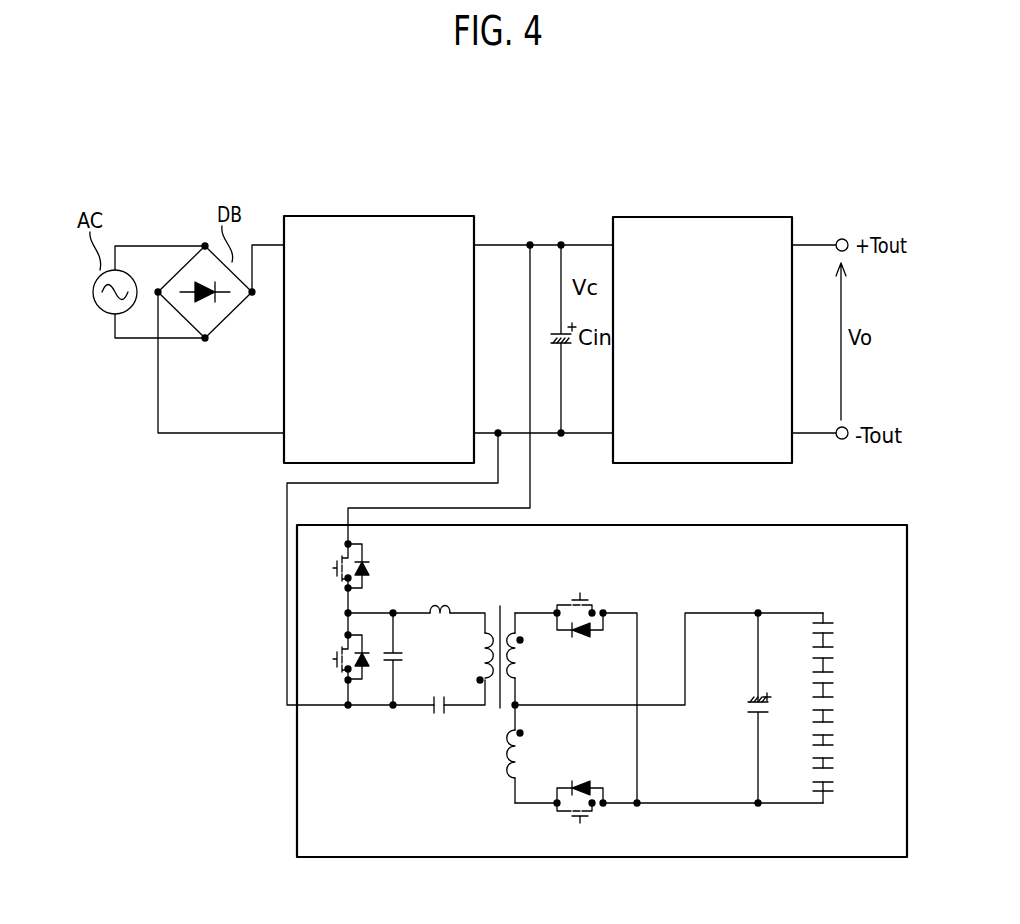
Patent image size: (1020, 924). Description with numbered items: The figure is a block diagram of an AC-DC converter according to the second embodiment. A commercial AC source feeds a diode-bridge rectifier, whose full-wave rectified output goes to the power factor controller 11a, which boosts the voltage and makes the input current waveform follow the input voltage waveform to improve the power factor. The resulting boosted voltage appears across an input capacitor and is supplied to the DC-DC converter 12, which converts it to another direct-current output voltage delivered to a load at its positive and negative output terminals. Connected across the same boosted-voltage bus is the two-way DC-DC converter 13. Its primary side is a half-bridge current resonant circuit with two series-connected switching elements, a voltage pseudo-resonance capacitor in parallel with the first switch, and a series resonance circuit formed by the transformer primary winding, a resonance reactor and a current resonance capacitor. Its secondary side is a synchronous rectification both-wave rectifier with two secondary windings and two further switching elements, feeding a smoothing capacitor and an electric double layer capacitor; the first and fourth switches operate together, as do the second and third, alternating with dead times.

The power factor controller 11a is at (372, 216).
The DC-DC converter 12 is at (697, 217).
The two-way DC-DC converter 13 is at (297, 778).